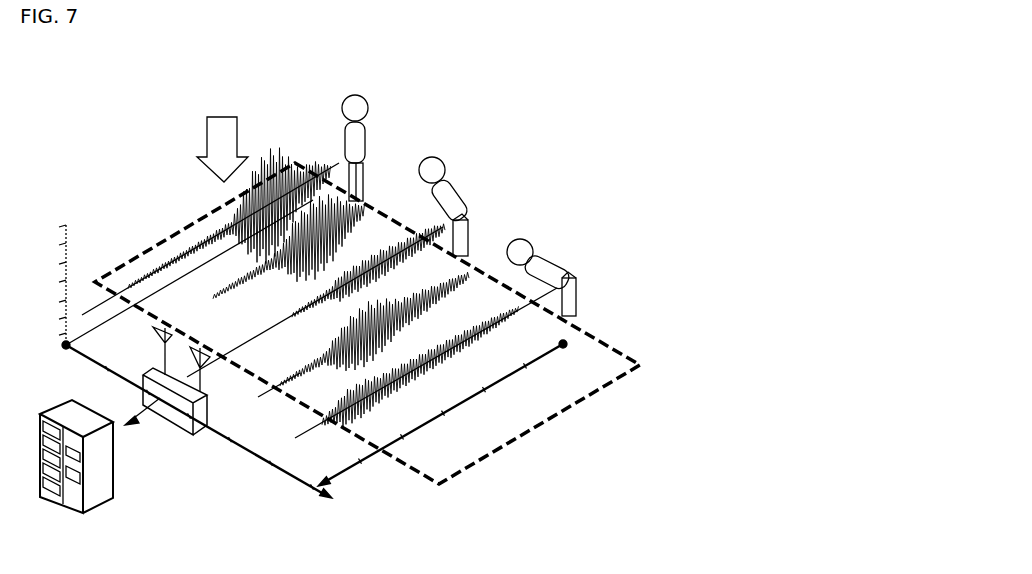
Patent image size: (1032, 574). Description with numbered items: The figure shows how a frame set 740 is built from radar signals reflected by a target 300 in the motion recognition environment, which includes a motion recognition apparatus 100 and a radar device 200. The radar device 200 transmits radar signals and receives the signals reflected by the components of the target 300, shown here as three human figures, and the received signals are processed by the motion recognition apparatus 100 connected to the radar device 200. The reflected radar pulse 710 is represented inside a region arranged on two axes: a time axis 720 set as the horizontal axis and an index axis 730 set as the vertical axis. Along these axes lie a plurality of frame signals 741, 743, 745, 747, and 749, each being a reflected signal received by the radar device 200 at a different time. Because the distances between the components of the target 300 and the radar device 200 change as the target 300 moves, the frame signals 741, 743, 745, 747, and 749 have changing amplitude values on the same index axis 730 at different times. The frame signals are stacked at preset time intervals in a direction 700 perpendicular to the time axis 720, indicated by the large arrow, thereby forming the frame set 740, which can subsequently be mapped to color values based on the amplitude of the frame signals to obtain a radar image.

The motion recognition apparatus 100 is at (54, 404).
The radar device 200 is at (178, 430).
The target 300 is at (459, 205).
The direction perpendicular to the time axis 700 is at (222, 116).
The reflected radar pulse 710 is at (150, 247).
The time axis 720 is at (337, 502).
The index axis 730 is at (507, 378).
The frame set 740 is at (618, 380).
The frame signal 741 is at (262, 152).
The frame signal 743 is at (347, 238).
The frame signal 745 is at (380, 273).
The frame signal 747 is at (440, 293).
The frame signal 749 is at (372, 404).